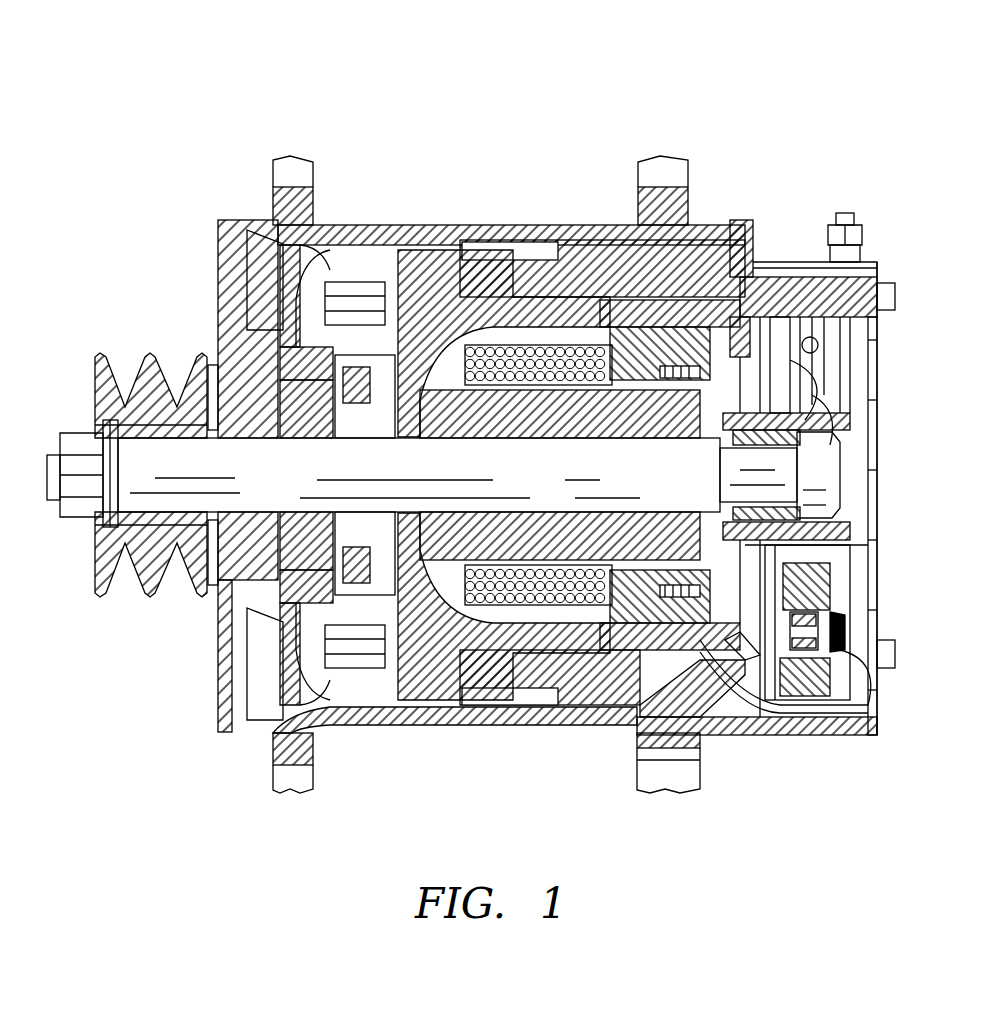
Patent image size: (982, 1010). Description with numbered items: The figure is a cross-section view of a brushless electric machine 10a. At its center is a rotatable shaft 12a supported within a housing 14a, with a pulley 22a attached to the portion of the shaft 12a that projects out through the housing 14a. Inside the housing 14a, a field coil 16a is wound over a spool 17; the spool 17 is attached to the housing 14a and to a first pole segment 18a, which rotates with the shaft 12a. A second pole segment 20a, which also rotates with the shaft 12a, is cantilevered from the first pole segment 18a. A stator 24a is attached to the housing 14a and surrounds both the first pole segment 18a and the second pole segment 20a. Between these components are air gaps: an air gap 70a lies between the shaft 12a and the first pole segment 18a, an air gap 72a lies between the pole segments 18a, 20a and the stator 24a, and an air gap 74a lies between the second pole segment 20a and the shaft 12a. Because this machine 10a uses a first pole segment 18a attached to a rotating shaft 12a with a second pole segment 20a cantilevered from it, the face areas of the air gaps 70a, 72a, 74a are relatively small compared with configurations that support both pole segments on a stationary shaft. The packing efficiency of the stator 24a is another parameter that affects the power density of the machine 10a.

The brushless electric machine 10a is at (257, 98).
The rotatable shaft 12a is at (232, 613).
The housing 14a is at (360, 235).
The field coil 16a is at (548, 652).
The spool 17 is at (690, 665).
The first pole segment 18a is at (450, 327).
The second pole segment 20a is at (660, 318).
The pulley 22a is at (95, 392).
The stator 24a is at (540, 272).
The air gap 70a is at (501, 546).
The air gap 72a is at (499, 336).
The air gap 74a is at (633, 623).